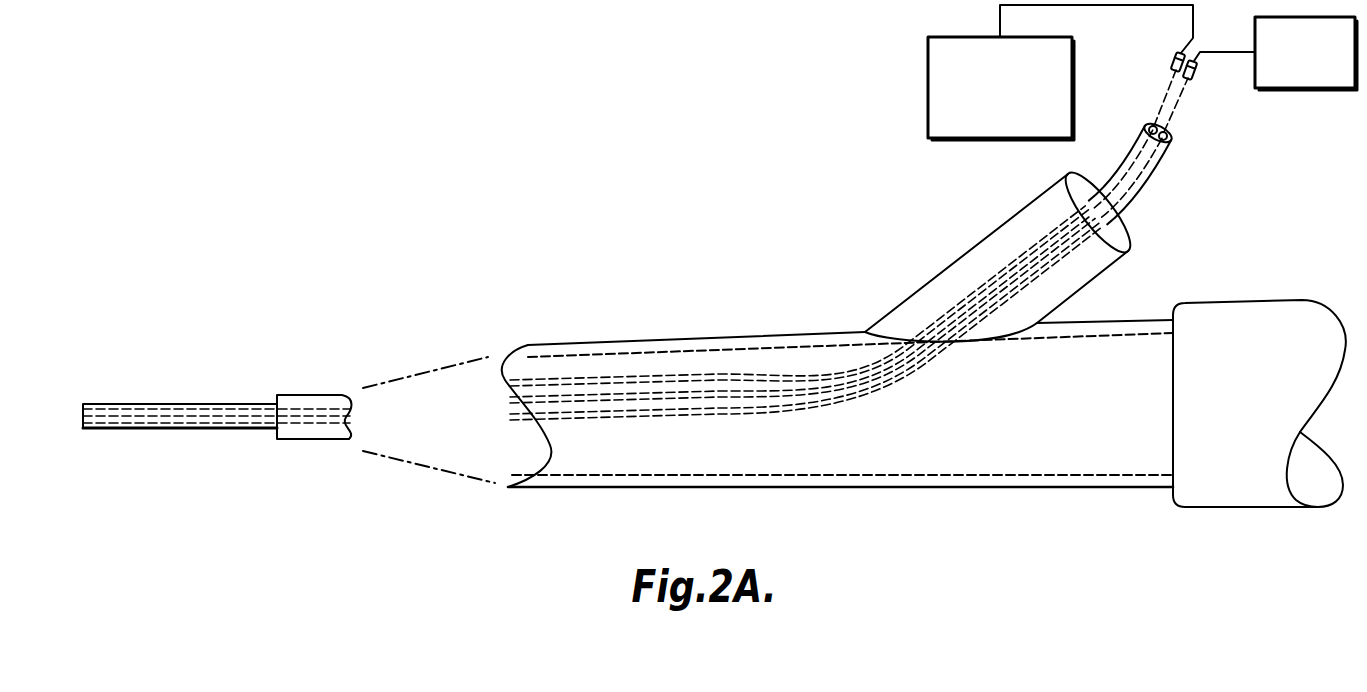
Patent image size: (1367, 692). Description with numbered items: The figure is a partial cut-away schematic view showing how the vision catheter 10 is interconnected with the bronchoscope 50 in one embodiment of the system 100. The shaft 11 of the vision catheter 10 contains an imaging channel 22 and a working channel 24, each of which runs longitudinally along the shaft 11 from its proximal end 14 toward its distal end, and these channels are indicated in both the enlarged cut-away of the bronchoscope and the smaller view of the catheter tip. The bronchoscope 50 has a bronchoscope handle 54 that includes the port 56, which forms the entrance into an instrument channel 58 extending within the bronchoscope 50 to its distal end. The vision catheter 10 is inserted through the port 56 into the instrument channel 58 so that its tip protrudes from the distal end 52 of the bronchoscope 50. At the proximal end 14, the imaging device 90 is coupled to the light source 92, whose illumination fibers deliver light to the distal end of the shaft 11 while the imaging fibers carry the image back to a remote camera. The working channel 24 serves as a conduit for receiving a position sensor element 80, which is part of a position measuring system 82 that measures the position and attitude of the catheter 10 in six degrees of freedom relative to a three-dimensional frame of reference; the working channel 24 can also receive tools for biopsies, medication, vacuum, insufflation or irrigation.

The vision catheter 10 is at (160, 395).
The shaft 11 is at (736, 375).
The proximal end 14 is at (1167, 162).
The imaging channel 22 is at (1170, 134).
The working channel 24 is at (1151, 122).
The bronchoscope 50 is at (627, 341).
The distal end of the bronchoscope 52 is at (300, 395).
The bronchoscope handle 54 is at (1243, 301).
The port 56 is at (995, 231).
The instrument channel 58 is at (1138, 337).
The position sensor element 80 is at (1172, 62).
The position measuring system 82 is at (928, 80).
The imaging device 90 is at (1196, 74).
The light source 92 is at (1296, 89).
The system 100 is at (693, 135).